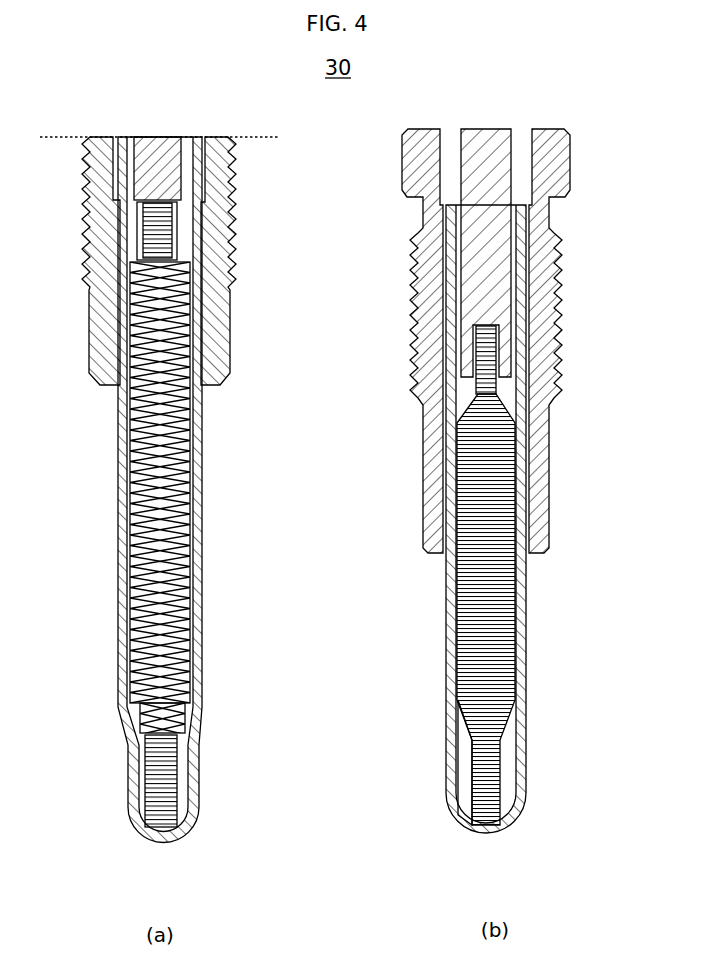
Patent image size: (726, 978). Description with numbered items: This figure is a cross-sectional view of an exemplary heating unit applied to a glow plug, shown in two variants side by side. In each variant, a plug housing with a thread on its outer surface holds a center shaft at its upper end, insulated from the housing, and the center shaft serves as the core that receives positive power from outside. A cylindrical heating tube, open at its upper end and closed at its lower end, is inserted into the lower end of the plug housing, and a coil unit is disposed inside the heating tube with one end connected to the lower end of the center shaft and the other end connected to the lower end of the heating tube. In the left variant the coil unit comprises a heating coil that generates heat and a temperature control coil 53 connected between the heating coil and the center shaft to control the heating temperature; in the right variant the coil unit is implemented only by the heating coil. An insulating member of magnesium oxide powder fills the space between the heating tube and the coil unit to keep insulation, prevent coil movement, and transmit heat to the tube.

The temperature control coil 53 is at (200, 645).